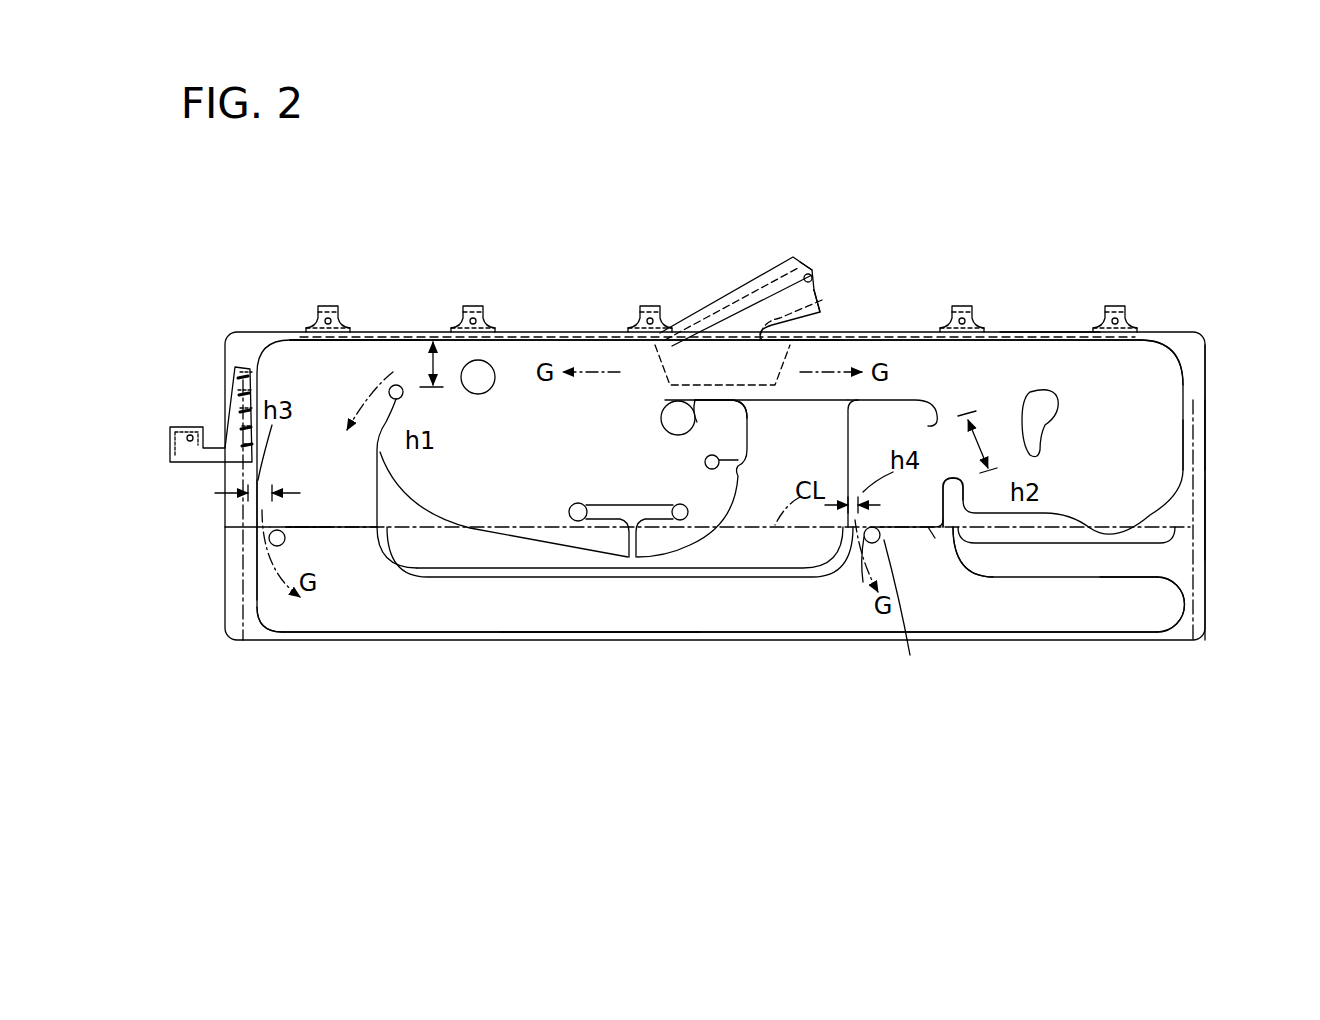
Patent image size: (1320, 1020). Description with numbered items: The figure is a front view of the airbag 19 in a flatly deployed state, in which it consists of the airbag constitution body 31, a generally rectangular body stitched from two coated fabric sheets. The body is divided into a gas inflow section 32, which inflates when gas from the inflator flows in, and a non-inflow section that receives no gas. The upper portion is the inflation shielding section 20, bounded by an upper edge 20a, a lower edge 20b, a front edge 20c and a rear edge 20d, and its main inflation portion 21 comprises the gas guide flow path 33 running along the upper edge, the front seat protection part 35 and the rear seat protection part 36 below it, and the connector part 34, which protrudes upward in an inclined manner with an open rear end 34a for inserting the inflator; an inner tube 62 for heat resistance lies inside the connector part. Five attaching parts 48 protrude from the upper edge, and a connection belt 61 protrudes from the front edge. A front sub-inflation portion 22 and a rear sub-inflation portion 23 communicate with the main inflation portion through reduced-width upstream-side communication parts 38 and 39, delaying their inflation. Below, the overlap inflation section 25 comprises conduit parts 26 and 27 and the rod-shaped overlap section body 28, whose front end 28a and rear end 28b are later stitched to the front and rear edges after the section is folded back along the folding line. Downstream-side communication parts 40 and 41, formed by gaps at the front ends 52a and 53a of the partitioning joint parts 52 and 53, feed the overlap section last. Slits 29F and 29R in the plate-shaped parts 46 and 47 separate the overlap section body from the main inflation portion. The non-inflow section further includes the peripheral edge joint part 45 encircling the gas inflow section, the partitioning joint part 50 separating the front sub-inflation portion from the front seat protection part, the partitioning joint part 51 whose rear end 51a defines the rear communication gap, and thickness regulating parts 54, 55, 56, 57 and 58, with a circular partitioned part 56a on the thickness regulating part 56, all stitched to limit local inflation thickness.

The airbag 19 is at (1190, 228).
The inflation shielding section 20 is at (1215, 345).
The upper edge of inflation shielding section 20a is at (1045, 330).
The bottom wall of head cover 20b is at (1185, 520).
The front edge of inflation shielding section 20c is at (235, 492).
The rear edge of inflation shielding section 20d is at (1205, 433).
The main inflation portion 21 is at (890, 328).
The front sub-inflation portion 22 is at (262, 502).
The rear sub-inflation portion 23 is at (928, 530).
The overlap inflation section 25 is at (607, 637).
The conduit part 26 is at (358, 548).
The conduit part 27 is at (872, 545).
The overlap section body 28 is at (538, 612).
The front end of overlap section body 28a is at (265, 606).
The rear end of overlap section body 28b is at (1153, 617).
The slit 29F is at (728, 572).
The slit 29R is at (1068, 555).
The airbag constitution body 31 is at (1204, 136).
The gas inflow section 32 is at (270, 368).
The gas guide flow path 33 is at (838, 345).
The connector part 34 is at (710, 392).
The rear end of connector part 34a is at (805, 262).
The front seat protection part 35 is at (480, 540).
The rear seat protection part 36 is at (1185, 490).
The upstream-side communication part 38 is at (382, 360).
The upstream-side communication part 39 is at (950, 430).
The downstream-side communication part 40 is at (273, 533).
The downstream-side communication part 41 is at (853, 532).
The peripheral edge joint part 45 is at (1180, 325).
The plate-shaped part 46 is at (740, 440).
The plate-shaped part 47 is at (1175, 562).
The attaching part 48 is at (645, 318).
The partitioning joint part 50 is at (380, 466).
The partitioning joint part 51 is at (848, 412).
The rear end of partitioning joint part 51a is at (920, 345).
The partitioning joint part 52 is at (337, 522).
The front end of partitioning joint part 52a is at (290, 522).
The partitioning joint part 53 is at (940, 538).
The front end of partitioning joint part 53a is at (912, 500).
The thickness regulating part 54 is at (482, 384).
The thickness regulating part 55 is at (618, 542).
The thickness regulating part 56 is at (709, 392).
The partitioned part 56a is at (670, 415).
The thickness regulating part 57 is at (711, 472).
The thickness regulating part 58 is at (1045, 428).
The connection belt 61 is at (180, 415).
The inner tube 62 is at (735, 328).